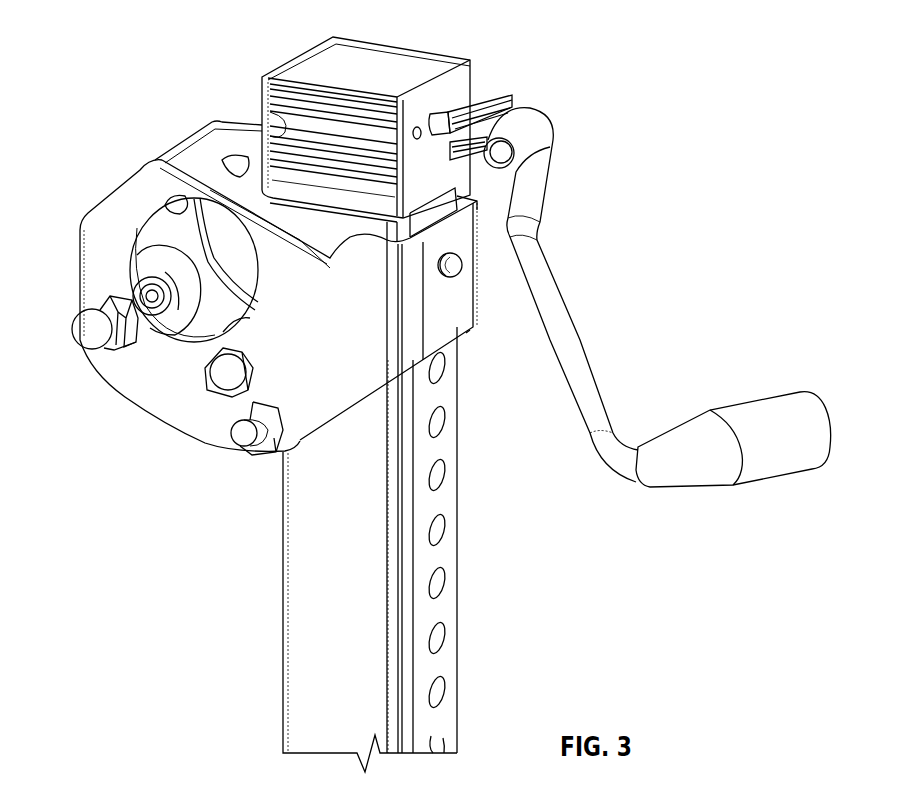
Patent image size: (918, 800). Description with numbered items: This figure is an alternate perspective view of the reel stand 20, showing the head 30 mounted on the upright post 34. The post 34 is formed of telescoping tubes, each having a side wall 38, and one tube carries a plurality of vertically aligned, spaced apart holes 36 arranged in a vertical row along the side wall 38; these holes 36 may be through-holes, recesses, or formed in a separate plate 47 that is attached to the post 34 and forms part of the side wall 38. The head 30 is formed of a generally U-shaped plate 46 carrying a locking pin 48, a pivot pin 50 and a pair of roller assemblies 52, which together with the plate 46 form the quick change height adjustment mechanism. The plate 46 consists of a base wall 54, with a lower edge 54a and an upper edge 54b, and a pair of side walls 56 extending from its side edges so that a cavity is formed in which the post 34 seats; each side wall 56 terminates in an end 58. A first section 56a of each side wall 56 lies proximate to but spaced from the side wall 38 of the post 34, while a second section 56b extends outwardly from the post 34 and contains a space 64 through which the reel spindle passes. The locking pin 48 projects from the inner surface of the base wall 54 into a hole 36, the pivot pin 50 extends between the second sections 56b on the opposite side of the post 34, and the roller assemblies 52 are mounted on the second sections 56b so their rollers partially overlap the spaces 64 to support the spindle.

The reel stand 20 is at (482, 50).
The head 30 is at (166, 442).
The post 34 is at (320, 650).
The holes 36 is at (447, 640).
The side wall 38 is at (446, 555).
The U-shaped plate 46 is at (80, 220).
The plate 47 is at (452, 488).
The locking pin 48 is at (461, 267).
The pivot pin 50 is at (243, 440).
The roller assemblies 52 is at (72, 342).
The base wall 54 is at (452, 327).
The lower edge 54a is at (463, 338).
The upper edge 54b is at (538, 233).
The side walls 56 is at (200, 155).
The first section 56a is at (458, 201).
The second section 56b is at (257, 137).
The end 58 is at (133, 237).
The space 64 is at (246, 160).